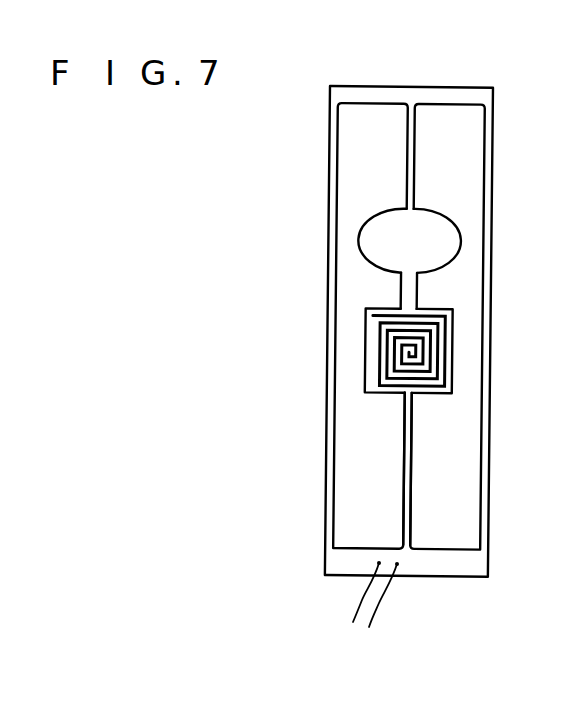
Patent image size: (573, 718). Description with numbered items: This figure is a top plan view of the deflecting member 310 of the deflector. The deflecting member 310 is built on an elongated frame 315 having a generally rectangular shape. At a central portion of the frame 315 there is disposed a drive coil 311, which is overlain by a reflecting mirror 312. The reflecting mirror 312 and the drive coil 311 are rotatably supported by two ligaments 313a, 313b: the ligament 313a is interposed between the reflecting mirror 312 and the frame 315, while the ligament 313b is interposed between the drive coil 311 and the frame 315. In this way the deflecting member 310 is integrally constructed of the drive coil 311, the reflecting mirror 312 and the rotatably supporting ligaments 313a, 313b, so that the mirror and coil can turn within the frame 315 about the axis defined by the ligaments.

The deflecting member 310 is at (446, 85).
The drive coil 311 is at (365, 352).
The reflecting mirror 312 is at (365, 243).
The ligament 313a is at (408, 157).
The ligament 313b is at (405, 466).
The frame 315 is at (330, 126).